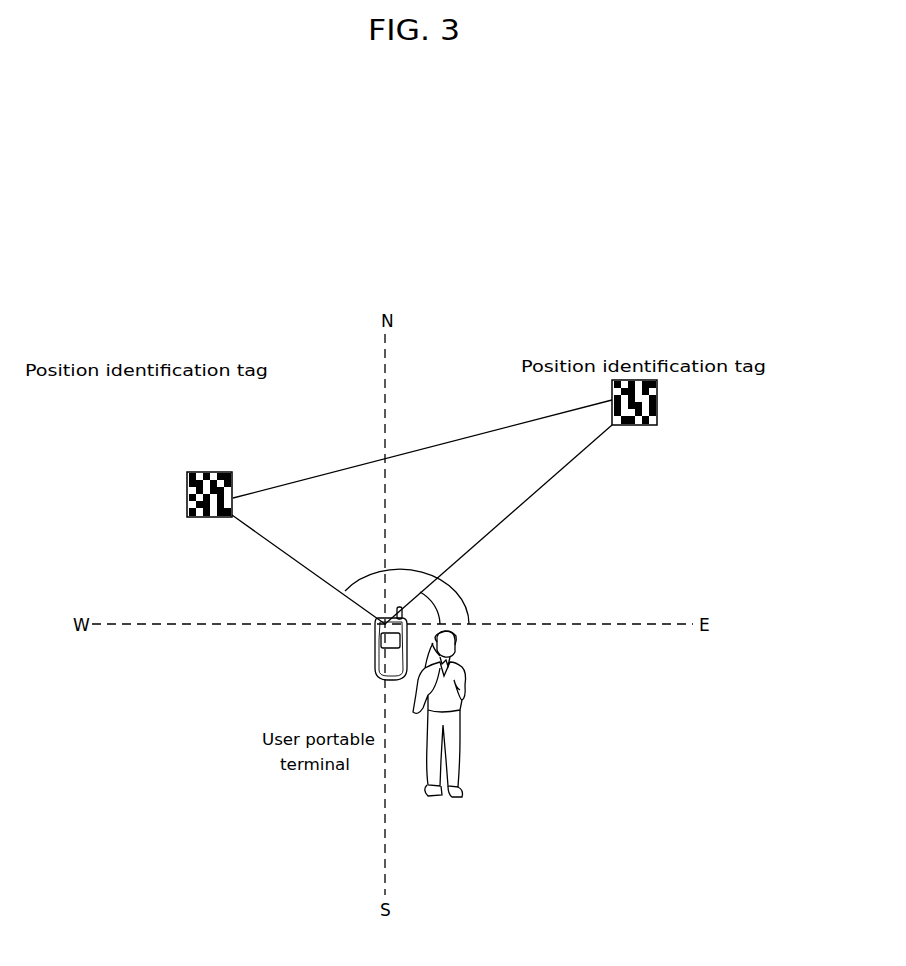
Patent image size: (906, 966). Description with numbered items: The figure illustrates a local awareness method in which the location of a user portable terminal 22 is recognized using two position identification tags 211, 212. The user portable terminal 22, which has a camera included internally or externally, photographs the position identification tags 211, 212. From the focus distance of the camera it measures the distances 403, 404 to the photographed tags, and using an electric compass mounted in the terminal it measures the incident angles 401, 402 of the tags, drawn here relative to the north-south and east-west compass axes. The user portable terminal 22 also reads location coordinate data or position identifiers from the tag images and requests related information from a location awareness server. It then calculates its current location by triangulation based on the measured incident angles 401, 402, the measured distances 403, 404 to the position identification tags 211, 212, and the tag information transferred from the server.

The position identification tag 212 is at (185, 487).
The position identification tag 211 is at (660, 404).
The user portable terminal 22 is at (369, 650).
The measured distance 404 is at (268, 542).
The measured distance 403 is at (589, 449).
The measured incident angle 402 is at (409, 567).
The measured incident angle 401 is at (437, 607).